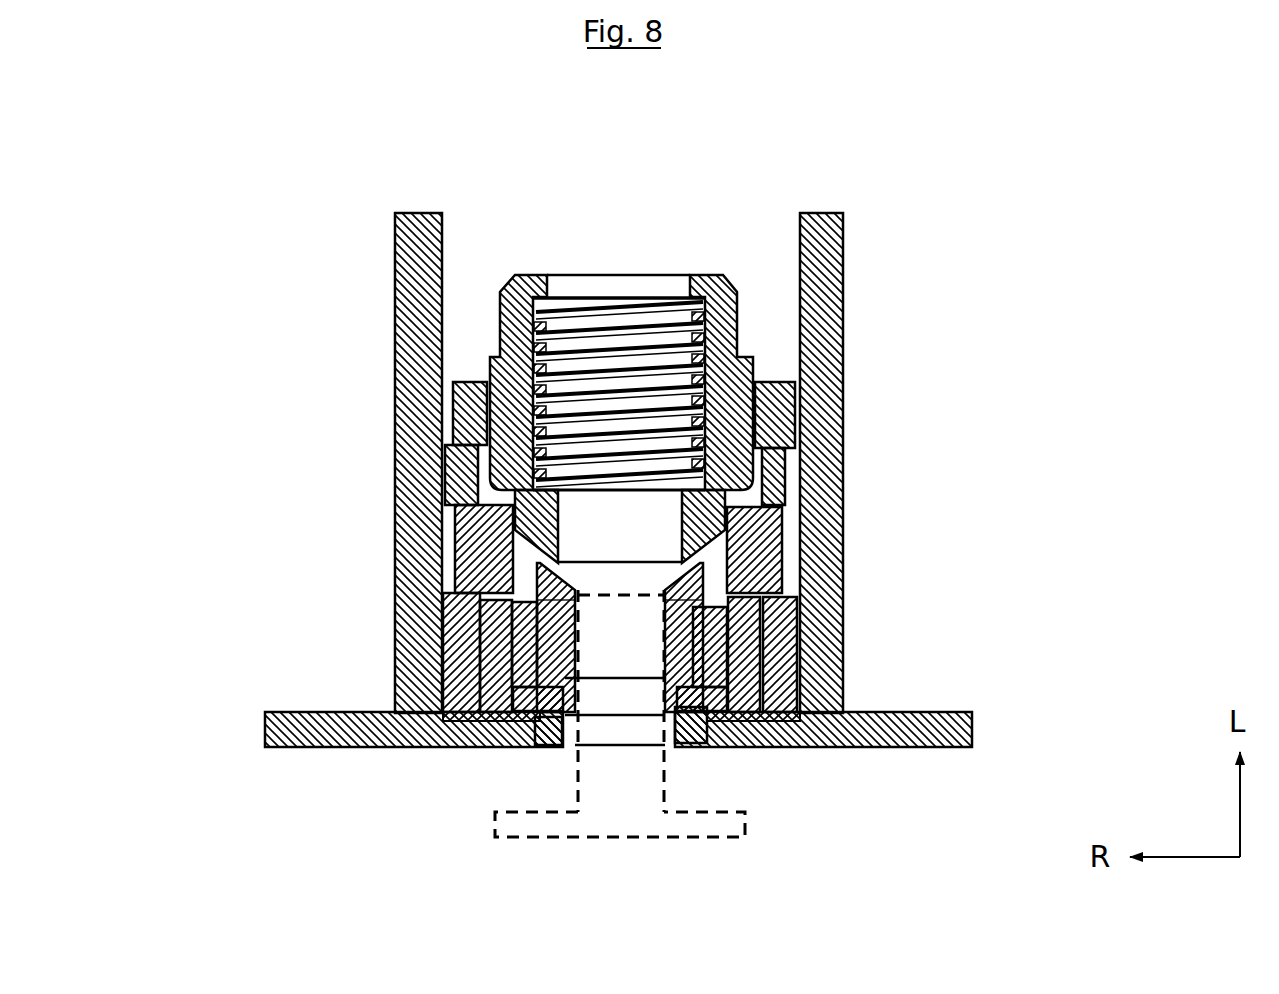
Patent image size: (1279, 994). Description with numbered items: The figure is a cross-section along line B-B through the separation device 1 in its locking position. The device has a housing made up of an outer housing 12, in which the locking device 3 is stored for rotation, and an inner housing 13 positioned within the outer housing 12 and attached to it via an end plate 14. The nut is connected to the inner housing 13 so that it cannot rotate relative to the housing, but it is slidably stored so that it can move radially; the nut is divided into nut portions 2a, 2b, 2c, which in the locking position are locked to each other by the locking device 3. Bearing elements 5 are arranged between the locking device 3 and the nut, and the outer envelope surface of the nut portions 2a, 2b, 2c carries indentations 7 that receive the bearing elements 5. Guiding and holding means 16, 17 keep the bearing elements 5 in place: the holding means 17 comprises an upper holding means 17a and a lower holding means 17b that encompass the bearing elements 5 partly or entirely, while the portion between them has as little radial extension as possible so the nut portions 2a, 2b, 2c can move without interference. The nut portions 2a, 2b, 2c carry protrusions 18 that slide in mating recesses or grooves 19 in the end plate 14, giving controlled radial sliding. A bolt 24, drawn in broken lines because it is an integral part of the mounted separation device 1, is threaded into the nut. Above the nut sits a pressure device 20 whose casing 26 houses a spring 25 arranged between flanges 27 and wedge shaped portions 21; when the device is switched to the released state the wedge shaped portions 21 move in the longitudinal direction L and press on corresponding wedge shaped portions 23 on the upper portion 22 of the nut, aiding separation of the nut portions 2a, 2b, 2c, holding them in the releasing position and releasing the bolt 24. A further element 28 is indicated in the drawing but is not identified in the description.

The separation device 1 is at (322, 263).
The nut portion 2a is at (752, 670).
The nut portion 2b is at (708, 636).
The nut portion 2c is at (686, 655).
The locking device 3 is at (458, 652).
The bearing element 5 is at (445, 690).
The indentation 7 is at (397, 545).
The outer housing 12 is at (395, 393).
The inner housing 13 is at (705, 745).
The end plate 14 is at (727, 748).
The guiding means 16 is at (522, 650).
The holding means 17 is at (620, 652).
The upper holding means 17a is at (482, 668).
The lower holding means 17b is at (445, 712).
The protrusion 18 is at (557, 713).
The recess or groove 19 is at (530, 712).
The pressure device 20 is at (757, 368).
The wedge shaped portion 21 is at (710, 513).
The upper portion 22 is at (668, 583).
The wedge shaped portion 23 is at (620, 656).
The bolt 24 is at (572, 823).
The spring 25 is at (653, 317).
The casing 26 is at (740, 338).
The flange 27 is at (710, 271).
The bore 28 is at (615, 803).